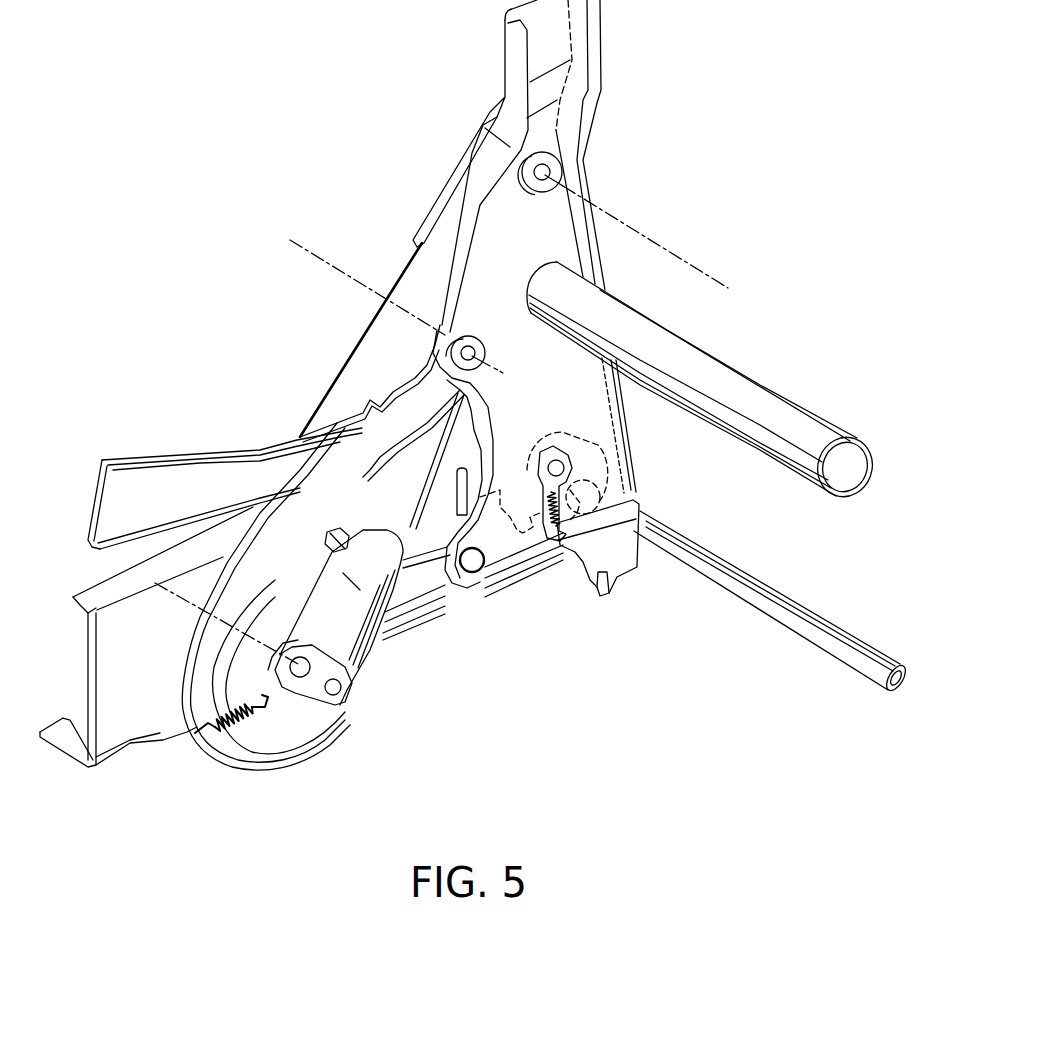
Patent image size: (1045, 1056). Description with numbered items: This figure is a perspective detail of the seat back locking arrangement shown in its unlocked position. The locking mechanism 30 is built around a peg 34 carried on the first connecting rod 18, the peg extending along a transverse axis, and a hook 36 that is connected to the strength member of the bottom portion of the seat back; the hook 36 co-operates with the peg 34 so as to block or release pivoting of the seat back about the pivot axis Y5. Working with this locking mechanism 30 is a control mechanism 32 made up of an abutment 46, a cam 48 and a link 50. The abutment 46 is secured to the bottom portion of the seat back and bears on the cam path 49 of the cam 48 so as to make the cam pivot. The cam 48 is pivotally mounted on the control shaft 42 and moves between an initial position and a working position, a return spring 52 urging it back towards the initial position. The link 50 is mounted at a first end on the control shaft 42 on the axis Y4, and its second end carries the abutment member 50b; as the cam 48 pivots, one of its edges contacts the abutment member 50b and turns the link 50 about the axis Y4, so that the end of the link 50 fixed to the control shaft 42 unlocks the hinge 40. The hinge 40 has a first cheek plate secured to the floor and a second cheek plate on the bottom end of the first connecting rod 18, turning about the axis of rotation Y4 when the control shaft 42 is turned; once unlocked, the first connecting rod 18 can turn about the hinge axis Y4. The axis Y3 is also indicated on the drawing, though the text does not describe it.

The first connecting rod 18 is at (380, 345).
The locking mechanism 30 is at (292, 393).
The control mechanism 32 is at (560, 700).
The peg 34 is at (337, 545).
The hook 36 is at (545, 513).
The hinge 40 is at (217, 670).
The control shaft 42 is at (300, 675).
The abutment 46 is at (471, 562).
The cam 48 is at (340, 633).
The cam path 49 is at (345, 575).
The link 50 is at (313, 690).
The abutment member 50b is at (337, 692).
The return spring 52 is at (208, 745).
The axis Y3 is at (313, 258).
The axis of rotation Y4 is at (182, 597).
The pivot axis Y5 is at (693, 266).